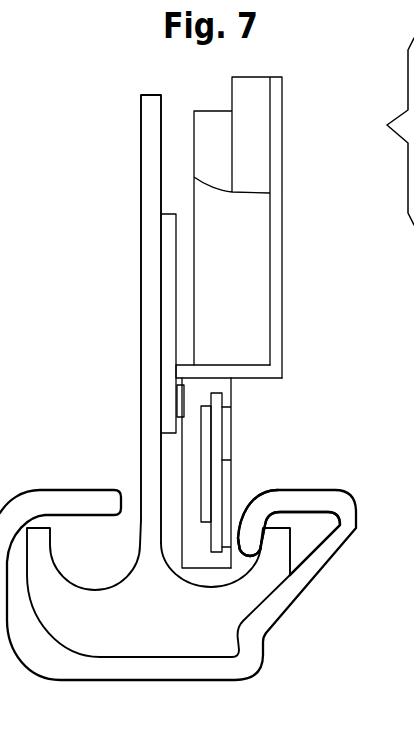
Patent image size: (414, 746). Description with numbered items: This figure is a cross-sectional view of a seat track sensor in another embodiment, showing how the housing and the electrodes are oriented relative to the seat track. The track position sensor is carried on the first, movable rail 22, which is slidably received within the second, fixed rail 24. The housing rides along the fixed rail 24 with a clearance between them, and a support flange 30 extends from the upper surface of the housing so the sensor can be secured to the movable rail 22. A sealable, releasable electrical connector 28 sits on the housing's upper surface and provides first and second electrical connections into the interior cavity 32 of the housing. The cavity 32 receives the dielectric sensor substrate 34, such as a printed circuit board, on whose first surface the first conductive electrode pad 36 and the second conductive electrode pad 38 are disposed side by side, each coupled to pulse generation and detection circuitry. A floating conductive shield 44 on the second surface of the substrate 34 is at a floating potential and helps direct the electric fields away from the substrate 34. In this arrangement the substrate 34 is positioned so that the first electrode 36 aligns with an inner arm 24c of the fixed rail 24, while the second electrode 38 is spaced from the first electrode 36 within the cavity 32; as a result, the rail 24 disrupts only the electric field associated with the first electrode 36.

The first movable rail 22 is at (147, 173).
The second fixed rail 24 is at (313, 587).
The inner arm 24c is at (248, 503).
The electrical connector 28 is at (263, 328).
The support flange 30 is at (167, 273).
The interior cavity 32 is at (203, 383).
The sensor substrate 34 is at (213, 471).
The first conductive electrode pad 36 is at (238, 528).
The second conductive electrode pad 38 is at (227, 409).
The floating conductive shield 44 is at (200, 442).